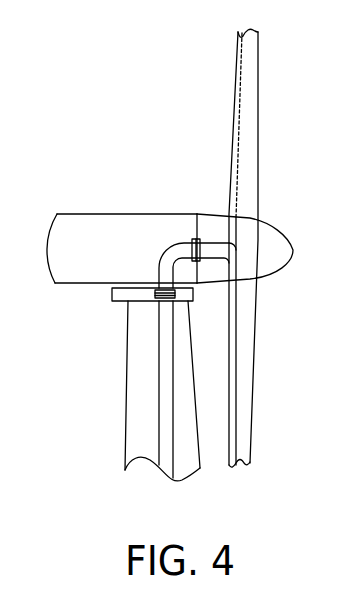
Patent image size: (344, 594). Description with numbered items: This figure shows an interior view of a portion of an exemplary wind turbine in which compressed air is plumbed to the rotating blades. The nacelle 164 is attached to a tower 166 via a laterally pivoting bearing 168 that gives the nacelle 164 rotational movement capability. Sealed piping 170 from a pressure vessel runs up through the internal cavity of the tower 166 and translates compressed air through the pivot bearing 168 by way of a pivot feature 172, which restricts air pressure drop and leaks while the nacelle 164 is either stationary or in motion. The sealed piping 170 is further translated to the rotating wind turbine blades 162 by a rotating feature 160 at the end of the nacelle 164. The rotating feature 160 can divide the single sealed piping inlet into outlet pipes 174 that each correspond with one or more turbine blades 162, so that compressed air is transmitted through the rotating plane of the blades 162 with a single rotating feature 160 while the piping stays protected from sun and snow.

The rotating feature 160 is at (186, 228).
The turbine blades 162 is at (250, 405).
The nacelle 164 is at (53, 284).
The tower 166 is at (125, 422).
The pivot bearing 168 is at (111, 291).
The sealed piping 170 is at (190, 479).
The pivot feature 172 is at (147, 303).
The outlet pipes 174 is at (251, 248).